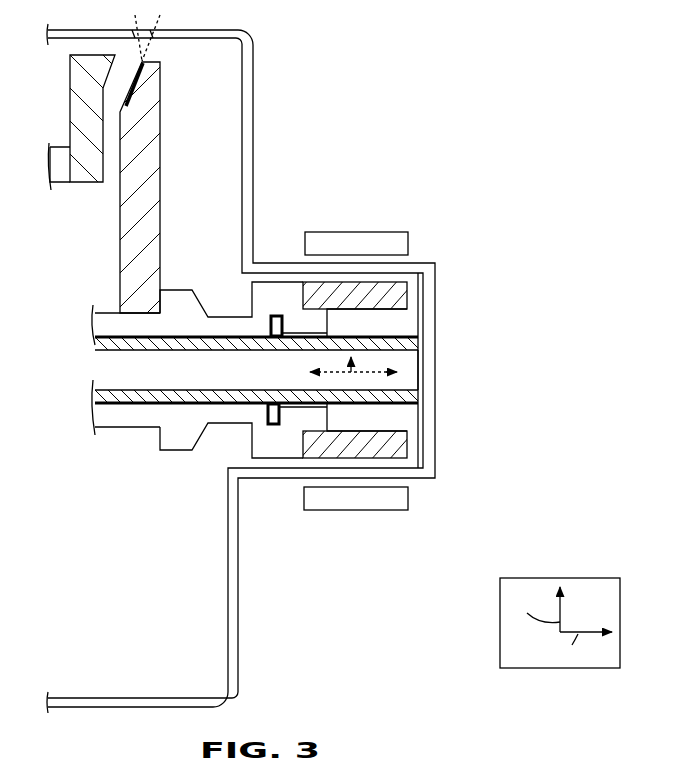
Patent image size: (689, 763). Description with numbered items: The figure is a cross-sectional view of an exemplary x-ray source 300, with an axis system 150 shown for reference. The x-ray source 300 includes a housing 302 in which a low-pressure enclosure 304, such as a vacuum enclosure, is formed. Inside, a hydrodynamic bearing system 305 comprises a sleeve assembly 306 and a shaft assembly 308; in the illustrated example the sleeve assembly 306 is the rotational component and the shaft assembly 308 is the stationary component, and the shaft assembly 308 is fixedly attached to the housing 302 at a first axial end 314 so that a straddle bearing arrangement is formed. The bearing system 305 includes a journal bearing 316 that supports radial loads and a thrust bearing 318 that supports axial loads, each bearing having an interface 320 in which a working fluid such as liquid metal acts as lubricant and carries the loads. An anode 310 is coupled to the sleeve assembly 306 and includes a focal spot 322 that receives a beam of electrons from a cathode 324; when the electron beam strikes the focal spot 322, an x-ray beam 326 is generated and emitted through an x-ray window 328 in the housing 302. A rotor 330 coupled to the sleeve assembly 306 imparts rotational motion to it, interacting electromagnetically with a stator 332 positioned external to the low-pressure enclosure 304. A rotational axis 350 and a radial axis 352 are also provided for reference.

The x-ray source 300 is at (468, 52).
The housing 302 is at (431, 305).
The low-pressure enclosure 304 is at (195, 153).
The hydrodynamic bearing system 305 is at (206, 288).
The sleeve assembly 306 is at (177, 453).
The shaft assembly 308 is at (218, 403).
The anode 310 is at (147, 70).
The first axial end 314 is at (422, 362).
The journal bearing 316 is at (236, 330).
The thrust bearing 318 is at (272, 307).
The interface 320 is at (273, 426).
The focal spot 322 is at (131, 86).
The cathode 324 is at (95, 173).
The x-ray beam 326 is at (143, 39).
The x-ray window 328 is at (163, 13).
The rotor 330 is at (340, 310).
The stator 332 is at (327, 231).
The rotational axis 350 is at (327, 373).
The radial axis 352 is at (350, 370).
The axis system 150 is at (514, 567).